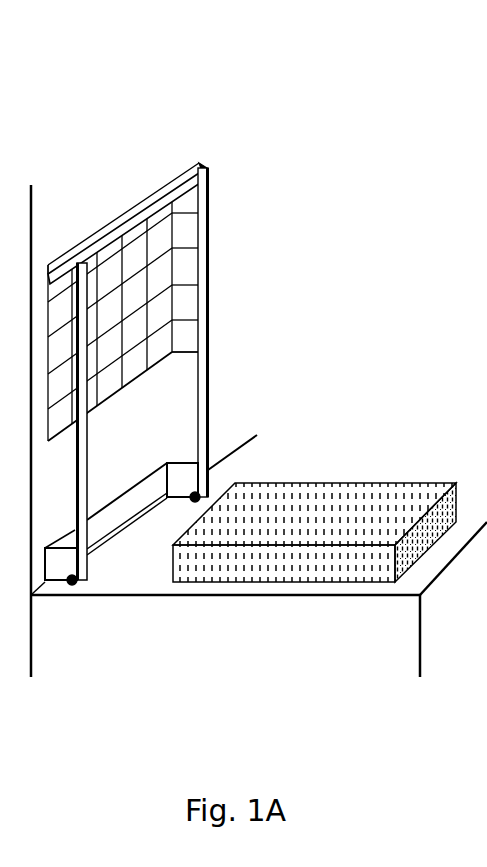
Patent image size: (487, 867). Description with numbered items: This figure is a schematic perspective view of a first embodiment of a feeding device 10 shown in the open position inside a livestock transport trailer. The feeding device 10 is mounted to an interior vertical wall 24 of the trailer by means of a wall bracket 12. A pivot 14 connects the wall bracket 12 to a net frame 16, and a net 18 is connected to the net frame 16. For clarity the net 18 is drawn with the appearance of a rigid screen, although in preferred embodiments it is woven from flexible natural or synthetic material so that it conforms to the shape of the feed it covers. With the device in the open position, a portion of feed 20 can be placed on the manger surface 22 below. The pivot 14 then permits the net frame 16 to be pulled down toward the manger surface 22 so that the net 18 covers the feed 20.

The feeding device 10 is at (208, 371).
The wall bracket 12 is at (130, 503).
The pivot 14 is at (74, 584).
The net frame 16 is at (211, 268).
The net 18 is at (150, 170).
The feed 20 is at (338, 561).
The manger surface 22 is at (415, 452).
The interior vertical wall 24 is at (66, 497).